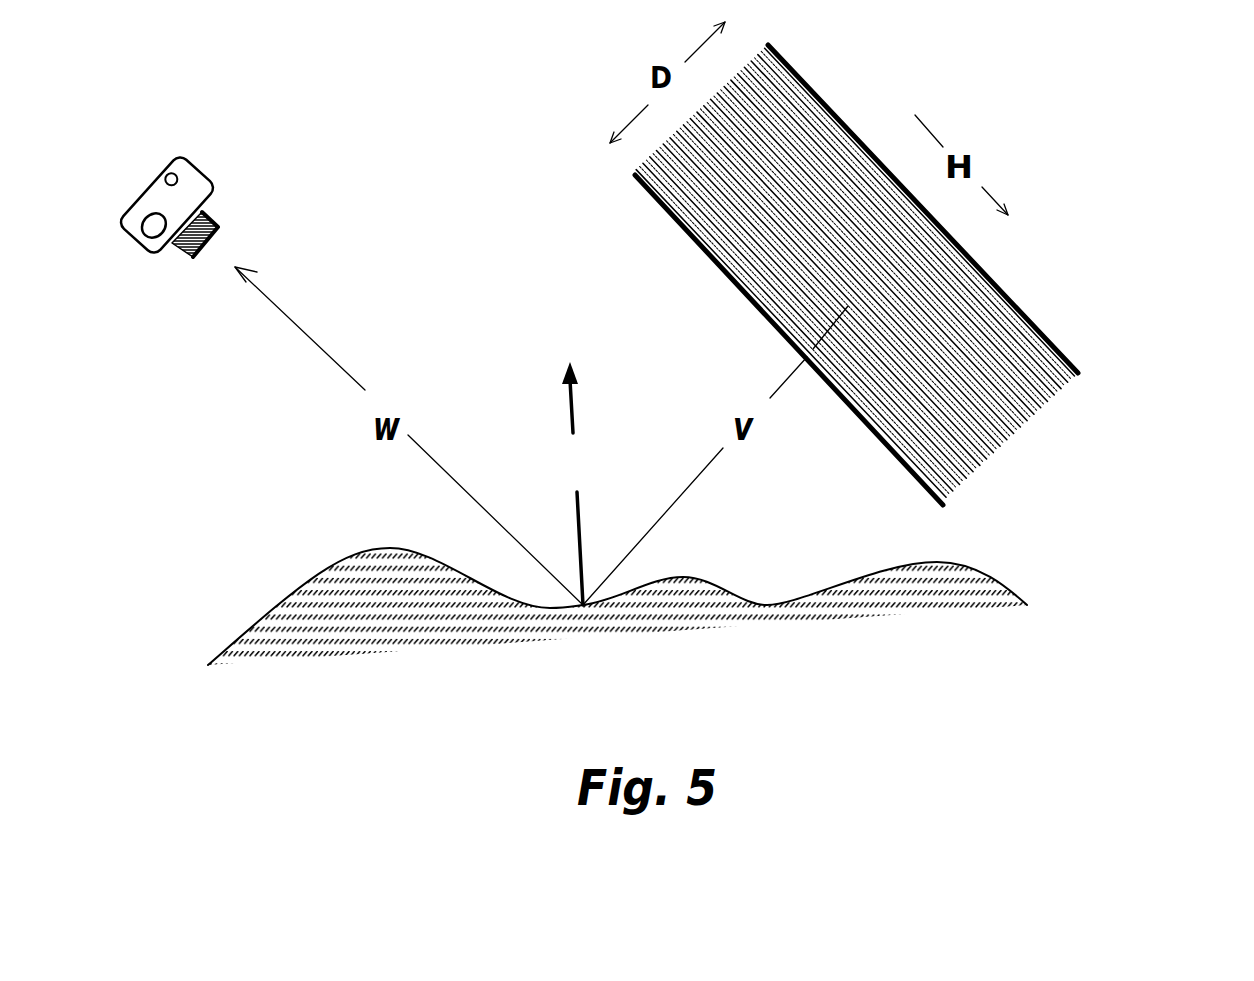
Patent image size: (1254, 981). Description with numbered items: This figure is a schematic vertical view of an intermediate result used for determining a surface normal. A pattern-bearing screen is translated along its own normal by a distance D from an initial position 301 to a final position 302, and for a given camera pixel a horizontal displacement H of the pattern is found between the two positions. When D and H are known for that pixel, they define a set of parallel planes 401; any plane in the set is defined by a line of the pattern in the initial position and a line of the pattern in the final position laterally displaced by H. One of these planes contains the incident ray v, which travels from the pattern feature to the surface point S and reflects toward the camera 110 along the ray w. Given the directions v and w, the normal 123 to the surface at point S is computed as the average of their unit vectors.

The camera 110 is at (165, 152).
The normal 123 is at (562, 461).
The set of parallel planes 401 is at (713, 222).
The initial position 301 is at (958, 520).
The final position 302 is at (1092, 388).